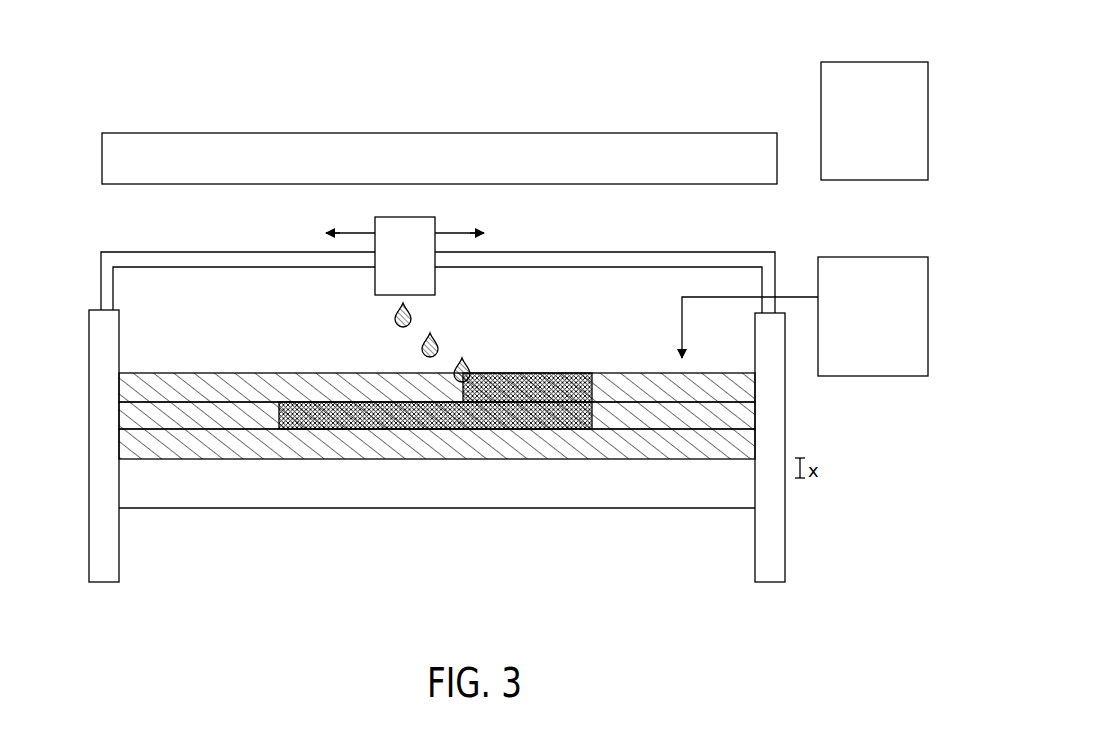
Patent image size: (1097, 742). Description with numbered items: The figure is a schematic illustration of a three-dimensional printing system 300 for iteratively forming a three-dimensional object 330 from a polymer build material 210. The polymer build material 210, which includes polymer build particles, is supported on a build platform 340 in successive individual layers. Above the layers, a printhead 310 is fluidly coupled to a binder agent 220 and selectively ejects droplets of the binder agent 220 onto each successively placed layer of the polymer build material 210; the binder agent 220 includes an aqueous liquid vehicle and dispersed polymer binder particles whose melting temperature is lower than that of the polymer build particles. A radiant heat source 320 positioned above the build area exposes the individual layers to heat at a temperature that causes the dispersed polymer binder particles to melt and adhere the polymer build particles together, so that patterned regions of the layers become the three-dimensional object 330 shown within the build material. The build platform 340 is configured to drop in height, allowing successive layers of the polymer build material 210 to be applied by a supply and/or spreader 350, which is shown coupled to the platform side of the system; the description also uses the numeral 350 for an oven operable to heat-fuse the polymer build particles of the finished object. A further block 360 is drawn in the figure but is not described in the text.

The three-dimensional printing system 300 is at (212, 82).
The radiant heat source 320 is at (460, 171).
The controller 360 is at (894, 132).
The supply and/or spreader 350 is at (893, 327).
The build platform 340 is at (572, 492).
The printhead 310 is at (425, 267).
The polymer build material 210 is at (185, 410).
The three-dimensional object 330 is at (382, 427).
The binder agent 220 is at (393, 318).